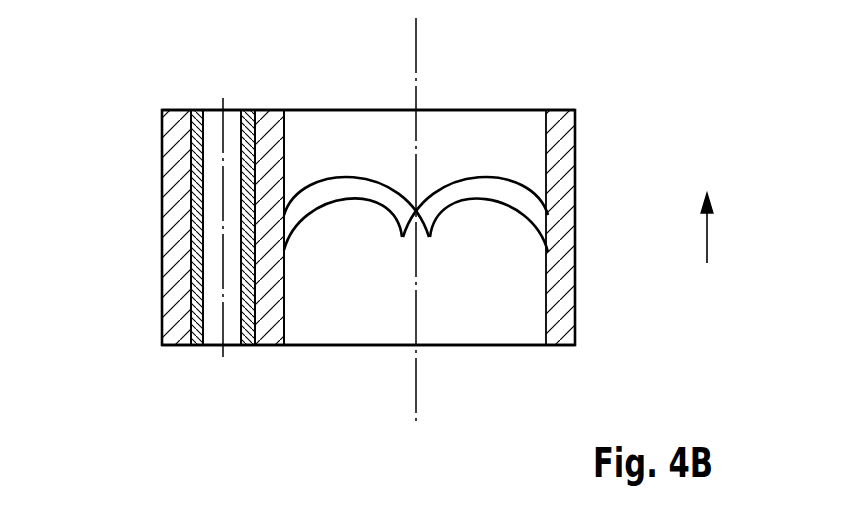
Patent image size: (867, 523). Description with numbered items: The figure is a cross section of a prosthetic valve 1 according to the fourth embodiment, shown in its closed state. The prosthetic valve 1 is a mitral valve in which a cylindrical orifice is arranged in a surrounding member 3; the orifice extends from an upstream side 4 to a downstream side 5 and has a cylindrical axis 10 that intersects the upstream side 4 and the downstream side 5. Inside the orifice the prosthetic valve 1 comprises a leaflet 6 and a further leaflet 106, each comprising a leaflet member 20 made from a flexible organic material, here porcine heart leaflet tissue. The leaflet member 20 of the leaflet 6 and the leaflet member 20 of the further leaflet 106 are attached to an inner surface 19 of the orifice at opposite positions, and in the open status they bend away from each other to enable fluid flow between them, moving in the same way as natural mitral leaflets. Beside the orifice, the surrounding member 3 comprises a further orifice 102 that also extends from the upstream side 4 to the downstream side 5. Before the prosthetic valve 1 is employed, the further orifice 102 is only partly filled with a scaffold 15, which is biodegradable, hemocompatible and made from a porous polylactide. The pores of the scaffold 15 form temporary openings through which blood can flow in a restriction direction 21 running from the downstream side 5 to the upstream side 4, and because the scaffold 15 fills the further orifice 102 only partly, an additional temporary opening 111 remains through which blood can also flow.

The prosthetic valve 1 is at (611, 152).
The surrounding member 3 is at (272, 110).
The upstream side 4 is at (327, 110).
The downstream side 5 is at (359, 347).
The leaflet 6 is at (352, 202).
The cylindrical axis 10 is at (417, 32).
The scaffold 15 is at (194, 328).
The inner surface 19 is at (284, 300).
The leaflet member 20 is at (345, 182).
The restriction direction 21 is at (707, 233).
The further orifice 102 is at (213, 115).
The further leaflet 106 is at (490, 202).
The additional temporary opening 111 is at (232, 332).